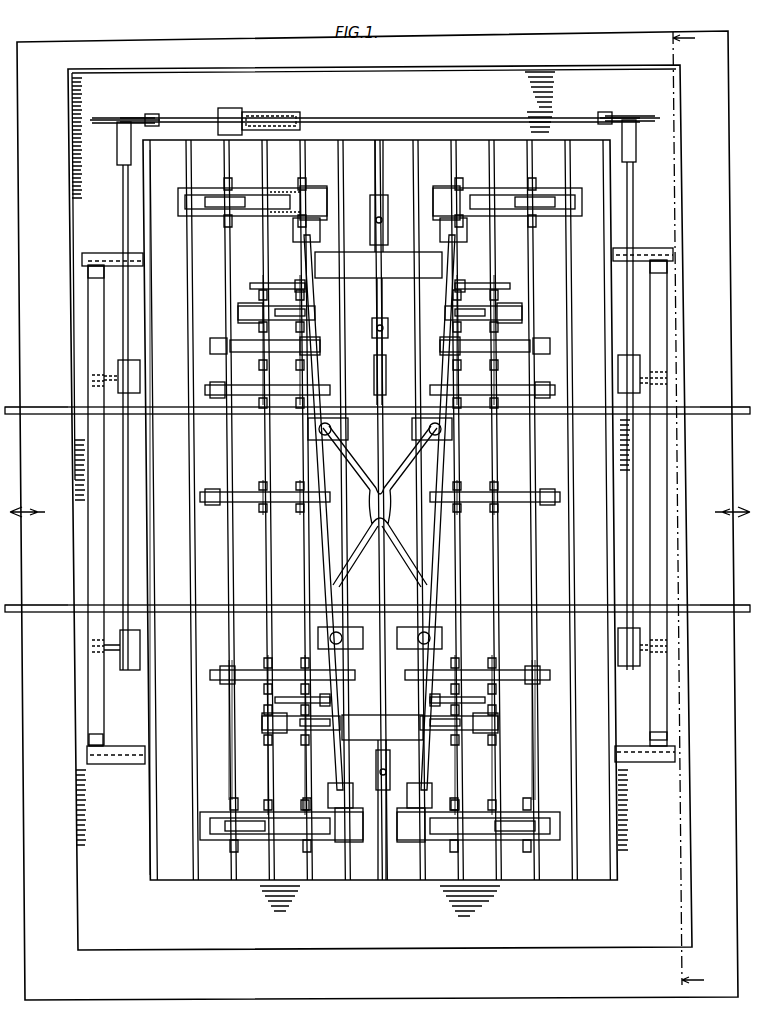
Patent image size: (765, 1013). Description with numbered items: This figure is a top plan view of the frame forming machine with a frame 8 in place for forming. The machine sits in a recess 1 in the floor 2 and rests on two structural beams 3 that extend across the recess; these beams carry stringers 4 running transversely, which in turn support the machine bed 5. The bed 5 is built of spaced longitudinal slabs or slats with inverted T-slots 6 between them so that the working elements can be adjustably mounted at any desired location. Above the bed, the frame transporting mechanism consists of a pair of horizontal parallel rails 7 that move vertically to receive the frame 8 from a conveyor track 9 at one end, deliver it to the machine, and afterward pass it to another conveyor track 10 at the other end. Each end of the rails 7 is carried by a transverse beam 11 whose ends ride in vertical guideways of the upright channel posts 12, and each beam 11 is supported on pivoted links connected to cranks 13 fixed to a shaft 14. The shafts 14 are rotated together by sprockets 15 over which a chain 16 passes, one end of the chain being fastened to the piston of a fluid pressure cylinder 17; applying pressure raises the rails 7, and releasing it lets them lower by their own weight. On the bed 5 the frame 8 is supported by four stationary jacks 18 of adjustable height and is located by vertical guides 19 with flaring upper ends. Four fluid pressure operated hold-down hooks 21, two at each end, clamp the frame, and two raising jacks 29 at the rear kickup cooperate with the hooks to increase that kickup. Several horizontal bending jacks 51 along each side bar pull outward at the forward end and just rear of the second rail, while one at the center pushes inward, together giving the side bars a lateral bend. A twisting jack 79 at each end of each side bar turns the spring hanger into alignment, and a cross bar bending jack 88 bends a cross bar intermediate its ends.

The recess 1 is at (74, 233).
The floor 2 is at (380, 507).
The structural beams 3 is at (685, 505).
The stringers 4 is at (195, 672).
The machine bed 5 is at (165, 813).
The inverted T-slots 6 is at (236, 723).
The horizontal parallel rails 7 is at (177, 420).
The frame 8 is at (326, 541).
The conveyor track 9 is at (722, 405).
The conveyor track 10 is at (46, 415).
The transverse beam 11 is at (93, 543).
The upright channel posts 12 is at (82, 263).
The cranks 13 is at (114, 382).
The shaft 14 is at (121, 216).
The sprockets 15 is at (118, 120).
The chain 16 is at (472, 117).
The fluid pressure cylinder 17 is at (262, 111).
The stationary jacks 18 is at (348, 432).
The vertical guides 19 is at (386, 229).
The hold-down hooks 21 is at (238, 308).
The raising jacks 29 is at (236, 340).
The horizontal bending jack 51 is at (223, 386).
The twisting jack 79 is at (325, 189).
The cross bar bending jack 88 is at (388, 385).